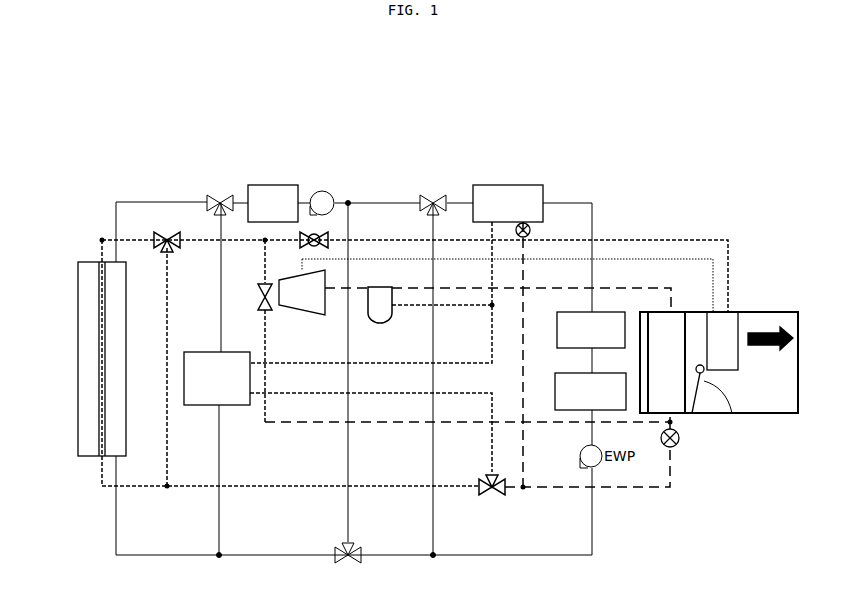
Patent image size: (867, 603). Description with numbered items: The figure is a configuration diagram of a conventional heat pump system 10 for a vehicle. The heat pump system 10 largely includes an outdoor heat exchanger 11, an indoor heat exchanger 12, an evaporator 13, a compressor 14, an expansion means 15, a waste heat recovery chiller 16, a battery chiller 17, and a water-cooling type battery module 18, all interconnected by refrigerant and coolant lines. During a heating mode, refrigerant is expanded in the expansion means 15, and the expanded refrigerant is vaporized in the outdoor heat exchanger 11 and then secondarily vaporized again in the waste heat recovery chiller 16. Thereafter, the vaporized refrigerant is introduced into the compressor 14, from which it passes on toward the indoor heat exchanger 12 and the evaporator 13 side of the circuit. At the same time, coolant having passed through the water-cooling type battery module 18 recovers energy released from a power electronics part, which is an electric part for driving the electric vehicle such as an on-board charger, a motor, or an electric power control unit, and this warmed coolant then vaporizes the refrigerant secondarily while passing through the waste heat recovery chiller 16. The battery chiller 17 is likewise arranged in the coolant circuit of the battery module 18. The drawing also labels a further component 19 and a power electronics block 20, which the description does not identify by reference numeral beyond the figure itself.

The heat pump system 10 is at (450, 156).
The outdoor heat exchanger 11 is at (88, 262).
The indoor heat exchanger 12 is at (719, 308).
The evaporator 13 is at (675, 323).
The compressor 14 is at (327, 278).
The expansion means 15 is at (680, 441).
The waste heat recovery chiller 16 is at (184, 376).
The battery chiller 17 is at (516, 185).
The water-cooling type battery module 18 is at (618, 410).
The condenser 19 is at (612, 312).
The power electronics 20 is at (277, 185).